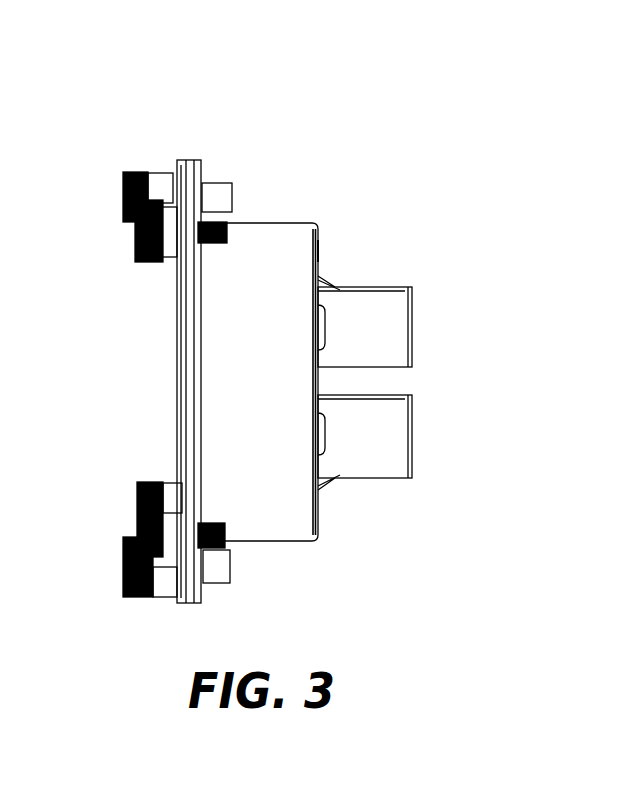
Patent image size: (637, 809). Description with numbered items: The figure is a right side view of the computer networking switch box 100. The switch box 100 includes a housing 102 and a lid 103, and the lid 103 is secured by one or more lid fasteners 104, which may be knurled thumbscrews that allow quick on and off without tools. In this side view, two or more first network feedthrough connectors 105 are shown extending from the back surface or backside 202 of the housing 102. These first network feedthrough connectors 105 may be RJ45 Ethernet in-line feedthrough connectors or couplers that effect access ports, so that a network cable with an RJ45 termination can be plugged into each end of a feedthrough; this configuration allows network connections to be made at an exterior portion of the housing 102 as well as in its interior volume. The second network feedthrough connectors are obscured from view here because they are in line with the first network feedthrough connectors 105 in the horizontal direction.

The switch box 100 is at (90, 128).
The housing 102 is at (278, 223).
The lid 103 is at (177, 350).
The lid fasteners 104 is at (140, 253).
The first network feedthrough connectors 105 is at (385, 287).
The backside 202 is at (318, 252).